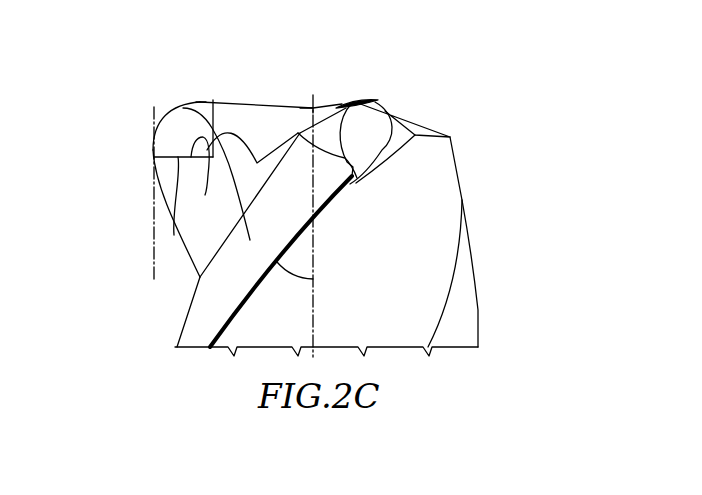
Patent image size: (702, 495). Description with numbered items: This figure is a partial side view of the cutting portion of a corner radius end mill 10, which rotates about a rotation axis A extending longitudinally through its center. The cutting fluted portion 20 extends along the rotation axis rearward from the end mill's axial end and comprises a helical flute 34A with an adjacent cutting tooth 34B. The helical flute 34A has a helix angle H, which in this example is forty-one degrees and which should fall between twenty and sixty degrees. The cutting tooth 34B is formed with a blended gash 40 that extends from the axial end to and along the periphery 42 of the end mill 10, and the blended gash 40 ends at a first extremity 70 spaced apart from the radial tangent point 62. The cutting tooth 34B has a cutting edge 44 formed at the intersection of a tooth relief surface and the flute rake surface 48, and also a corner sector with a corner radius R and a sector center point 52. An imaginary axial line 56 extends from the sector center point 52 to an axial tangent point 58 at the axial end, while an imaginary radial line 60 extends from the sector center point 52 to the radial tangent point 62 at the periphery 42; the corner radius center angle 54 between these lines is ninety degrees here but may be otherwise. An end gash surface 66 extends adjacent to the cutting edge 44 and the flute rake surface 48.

The corner radius end mill 10 is at (514, 207).
The cutting fluted portion 20 is at (482, 115).
The helical flute 34A is at (185, 283).
The cutting tooth 34B is at (260, 96).
The blended gash 40 is at (202, 96).
The periphery 42 is at (492, 226).
The cutting edge 44 is at (300, 98).
The flute rake surface 48 is at (195, 225).
The sector center point 52 is at (260, 163).
The corner radius center angle 54 is at (234, 180).
The imaginary axial line 56 is at (214, 127).
The axial tangent point 58 is at (213, 96).
The imaginary radial line 60 is at (172, 200).
The radial tangent point 62 is at (150, 154).
The end gash surface 66 is at (236, 214).
The first extremity 70 is at (178, 108).
The rotation axis A is at (312, 83).
The corner radius R is at (328, 92).
The helix angle H is at (295, 266).